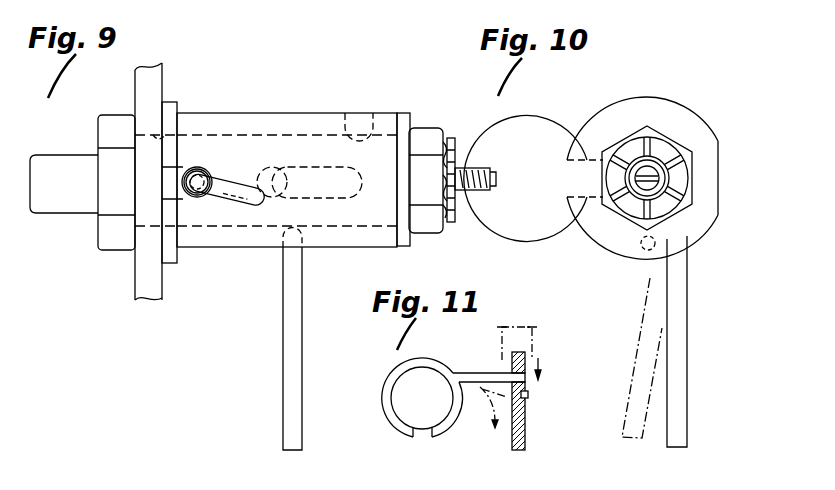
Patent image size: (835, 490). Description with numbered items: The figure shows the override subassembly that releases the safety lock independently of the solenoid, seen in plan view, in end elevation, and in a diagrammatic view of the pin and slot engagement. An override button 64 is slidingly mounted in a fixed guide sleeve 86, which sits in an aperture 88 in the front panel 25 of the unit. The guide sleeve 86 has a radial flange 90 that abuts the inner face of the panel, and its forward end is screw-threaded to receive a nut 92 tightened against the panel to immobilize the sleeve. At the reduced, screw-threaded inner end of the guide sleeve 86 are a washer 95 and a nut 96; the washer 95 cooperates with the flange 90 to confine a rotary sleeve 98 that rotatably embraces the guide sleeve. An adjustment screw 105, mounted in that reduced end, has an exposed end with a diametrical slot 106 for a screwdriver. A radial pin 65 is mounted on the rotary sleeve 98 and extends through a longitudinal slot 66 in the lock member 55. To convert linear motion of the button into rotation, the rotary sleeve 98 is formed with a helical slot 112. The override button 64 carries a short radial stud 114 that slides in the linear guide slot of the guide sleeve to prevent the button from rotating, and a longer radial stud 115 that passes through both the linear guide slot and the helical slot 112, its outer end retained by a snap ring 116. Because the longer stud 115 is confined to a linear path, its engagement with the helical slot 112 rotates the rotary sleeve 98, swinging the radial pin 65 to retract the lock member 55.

In FIG. 9, the front panel 25 is at (145, 283).
In FIG. 11, the lock member 55 is at (527, 420).
In FIG. 9, the override button 64 is at (62, 162).
In FIG. 9, the radial pin 65 is at (283, 337).
In FIG. 10, the radial pin 65 is at (687, 362).
In FIG. 11, the radial pin 65 is at (486, 372).
In FIG. 11, the longitudinal slot 66 is at (525, 365).
In FIG. 9, the guide sleeve 86 is at (350, 107).
In FIG. 9, the aperture 88 is at (185, 128).
In FIG. 9, the radial flange 90 is at (172, 265).
In FIG. 9, the nut 92 is at (115, 126).
In FIG. 9, the washer 95 is at (402, 115).
In FIG. 10, the washer 95 is at (610, 218).
In FIG. 9, the nut 96 is at (425, 133).
In FIG. 10, the nut 96 is at (663, 150).
In FIG. 9, the rotary sleeve 98 is at (303, 113).
In FIG. 10, the rotary sleeve 98 is at (622, 257).
In FIG. 11, the rotary sleeve 98 is at (388, 414).
In FIG. 9, the adjustment screw 105 is at (470, 170).
In FIG. 9, the diametrical slot 106 is at (488, 178).
In FIG. 10, the diametrical slot 106 is at (660, 178).
In FIG. 9, the helical slot 112 is at (227, 185).
In FIG. 10, the helical slot 112 is at (590, 177).
In FIG. 11, the helical slot 112 is at (420, 438).
In FIG. 9, the short radial stud 114 is at (295, 169).
In FIG. 9, the longer radial stud 115 is at (205, 176).
In FIG. 9, the snap ring 116 is at (200, 170).